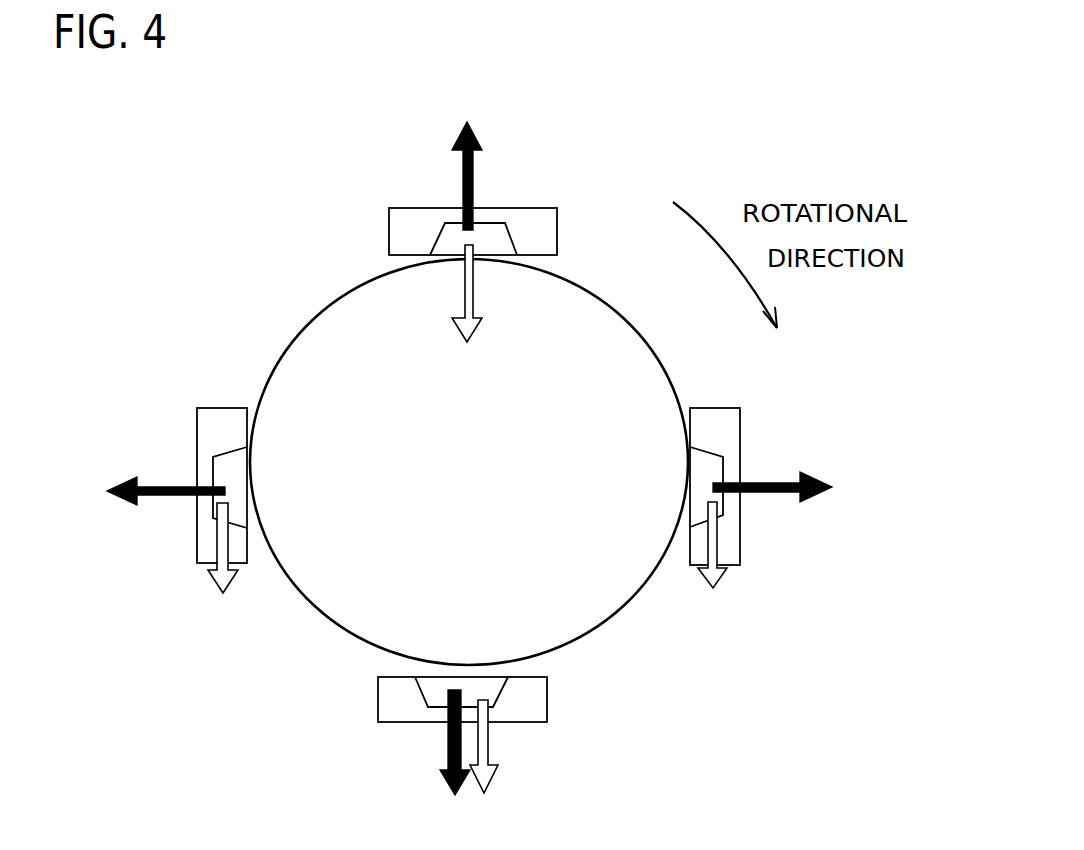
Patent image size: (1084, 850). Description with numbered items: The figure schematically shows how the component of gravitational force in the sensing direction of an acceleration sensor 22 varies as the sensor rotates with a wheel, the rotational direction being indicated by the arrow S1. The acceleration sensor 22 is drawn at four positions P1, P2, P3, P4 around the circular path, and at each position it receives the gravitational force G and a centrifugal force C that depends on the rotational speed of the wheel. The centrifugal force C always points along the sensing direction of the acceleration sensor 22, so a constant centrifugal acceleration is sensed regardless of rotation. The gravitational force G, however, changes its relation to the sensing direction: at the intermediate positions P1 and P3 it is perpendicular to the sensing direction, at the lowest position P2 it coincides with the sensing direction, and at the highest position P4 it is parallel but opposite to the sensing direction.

The acceleration sensor 22 is at (557, 229).
The rotary polishing table S1 is at (775, 134).
The centrifugal force C is at (466, 457).
The gravitational force G is at (467, 535).
The position P1 is at (650, 486).
The position P2 is at (470, 645).
The position P3 is at (275, 492).
The position P4 is at (439, 290).